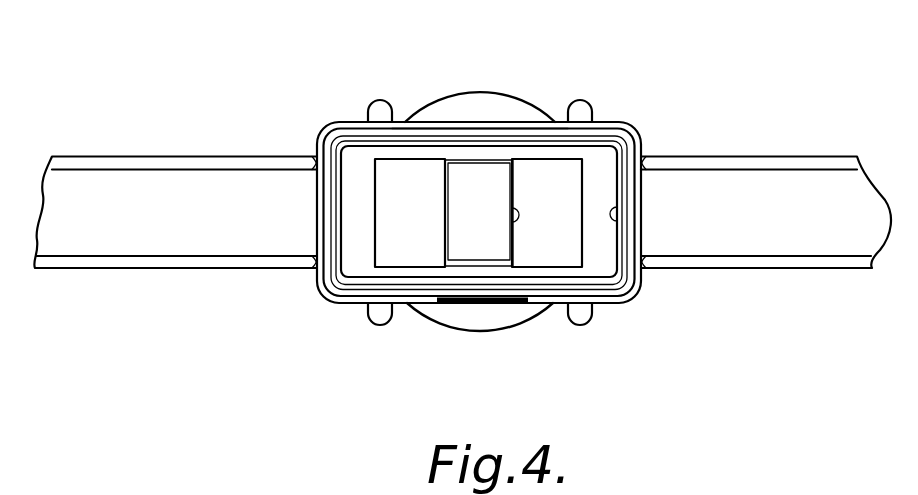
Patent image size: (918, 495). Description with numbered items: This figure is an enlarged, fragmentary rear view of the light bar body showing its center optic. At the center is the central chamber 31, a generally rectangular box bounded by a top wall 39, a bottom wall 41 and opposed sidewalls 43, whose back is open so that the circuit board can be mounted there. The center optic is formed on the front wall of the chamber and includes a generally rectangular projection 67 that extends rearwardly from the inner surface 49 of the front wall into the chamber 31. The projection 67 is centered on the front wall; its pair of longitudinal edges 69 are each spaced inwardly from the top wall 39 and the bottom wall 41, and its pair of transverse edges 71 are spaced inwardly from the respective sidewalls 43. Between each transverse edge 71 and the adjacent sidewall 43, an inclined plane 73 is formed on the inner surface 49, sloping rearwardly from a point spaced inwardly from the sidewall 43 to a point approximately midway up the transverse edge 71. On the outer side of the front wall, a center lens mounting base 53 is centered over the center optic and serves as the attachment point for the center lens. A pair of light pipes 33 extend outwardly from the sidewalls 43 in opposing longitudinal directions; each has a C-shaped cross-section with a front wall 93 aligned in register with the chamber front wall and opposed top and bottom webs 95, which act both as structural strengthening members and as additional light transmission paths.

The central chamber 31 is at (618, 220).
The light pipe 33 is at (148, 157).
The top wall 39 is at (455, 122).
The bottom wall 41 is at (503, 305).
The sidewall 43 is at (318, 197).
The inner surface 49 is at (360, 248).
The center lens mounting base 53 is at (480, 93).
The rectangular projection 67 is at (480, 198).
The longitudinal edge 69 is at (490, 163).
The transverse edge 71 is at (517, 222).
The inclined plane 73 is at (402, 180).
The front wall 93 is at (187, 232).
The web 95 is at (783, 172).